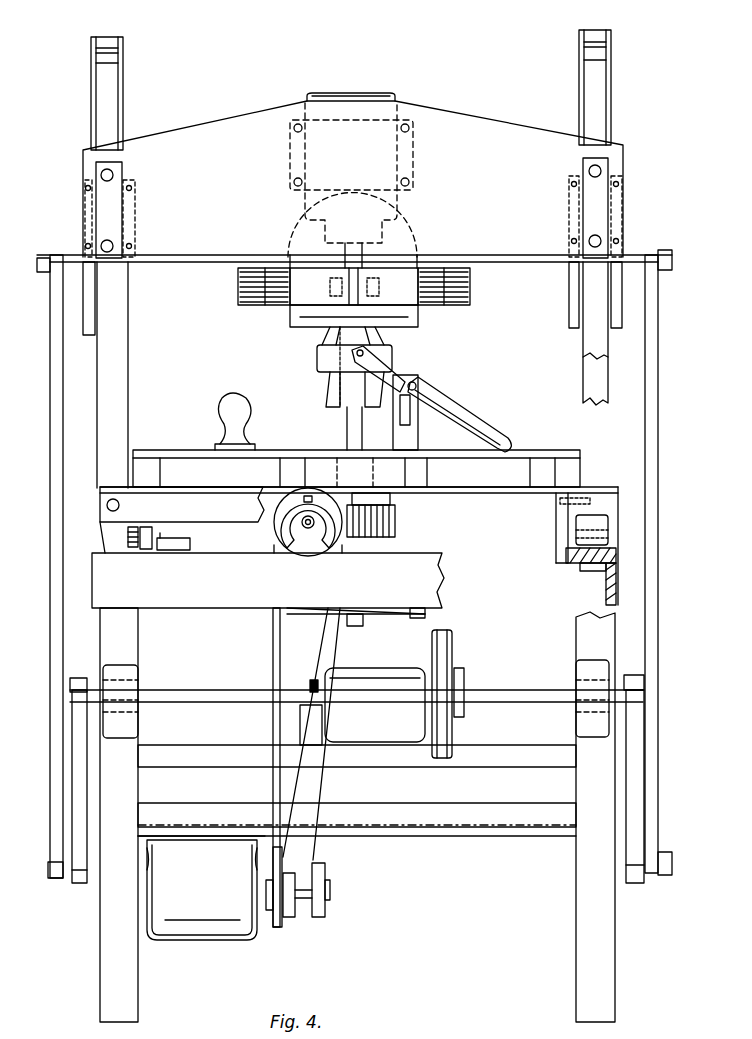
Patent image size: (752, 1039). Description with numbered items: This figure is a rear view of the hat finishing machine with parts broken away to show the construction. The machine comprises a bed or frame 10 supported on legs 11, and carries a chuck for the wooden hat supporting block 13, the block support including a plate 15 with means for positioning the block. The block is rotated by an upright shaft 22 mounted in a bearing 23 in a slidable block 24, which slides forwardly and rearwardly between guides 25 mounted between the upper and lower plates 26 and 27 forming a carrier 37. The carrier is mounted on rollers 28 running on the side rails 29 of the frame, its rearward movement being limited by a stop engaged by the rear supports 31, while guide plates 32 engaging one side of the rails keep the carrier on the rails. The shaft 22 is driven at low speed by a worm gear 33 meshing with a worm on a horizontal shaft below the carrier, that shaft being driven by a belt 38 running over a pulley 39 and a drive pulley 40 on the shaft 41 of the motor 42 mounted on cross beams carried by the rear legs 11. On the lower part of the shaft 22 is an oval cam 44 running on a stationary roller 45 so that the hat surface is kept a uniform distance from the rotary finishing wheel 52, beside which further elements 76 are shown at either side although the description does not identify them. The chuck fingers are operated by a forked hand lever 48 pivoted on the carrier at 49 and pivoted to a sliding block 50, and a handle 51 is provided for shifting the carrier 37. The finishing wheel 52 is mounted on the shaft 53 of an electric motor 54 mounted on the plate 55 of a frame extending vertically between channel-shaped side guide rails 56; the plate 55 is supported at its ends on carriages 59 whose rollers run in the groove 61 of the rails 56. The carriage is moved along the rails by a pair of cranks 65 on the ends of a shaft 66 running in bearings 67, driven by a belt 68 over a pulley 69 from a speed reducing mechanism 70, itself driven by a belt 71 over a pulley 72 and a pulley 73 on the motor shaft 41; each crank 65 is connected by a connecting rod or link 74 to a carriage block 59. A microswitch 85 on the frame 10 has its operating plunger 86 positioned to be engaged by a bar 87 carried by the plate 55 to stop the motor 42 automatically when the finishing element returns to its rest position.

The bed or frame 10 is at (625, 586).
The supporting legs 11 is at (101, 945).
The wooden hat supporting block 13 is at (417, 246).
The plate 15 is at (310, 335).
The upright shaft 22 is at (355, 440).
The bearing 23 is at (335, 466).
The slidable block 24 is at (390, 480).
The guides 25 is at (288, 460).
The upper plate 26 is at (535, 452).
The lower plate 27 is at (359, 477).
The rollers 28 is at (608, 528).
The side rails 29 is at (625, 558).
The rear supports 31 is at (620, 500).
The guide plates 32 is at (553, 560).
The worm gear 33 is at (398, 528).
The carrier 37 is at (566, 450).
The belt 38 is at (273, 647).
The pulley 39 is at (278, 528).
The drive pulley 40 is at (285, 928).
The motor shaft 41 is at (302, 908).
The motor 42 is at (207, 936).
The oval cam 44 is at (408, 616).
The stationary roller 45 is at (358, 616).
The forked hand lever 48 is at (470, 412).
The pivot 49 is at (420, 388).
The sliding block 50 is at (395, 357).
The hand grip or handle 51 is at (222, 405).
The rotary finishing wheel 52 is at (280, 318).
The motor shaft 53 is at (365, 266).
The electric motor 54 is at (395, 100).
The plate 55 is at (500, 131).
The side guide rails 56 is at (89, 130).
The carriages 59 is at (80, 300).
The groove 61 is at (106, 40).
The cranks 65 is at (75, 800).
The shaft 66 is at (233, 690).
The bearings 67 is at (123, 672).
The belt 68 is at (443, 630).
The pulley 69 is at (458, 658).
The speed reducing mechanism 70 is at (380, 670).
The belt 71 is at (320, 848).
The pulley 72 is at (308, 683).
The pulley 73 is at (330, 868).
The connecting rod or link 74 is at (50, 522).
The brushes 76 is at (250, 306).
The microswitch 85 is at (178, 552).
The operating plunger 86 is at (162, 535).
The bar 87 is at (155, 506).